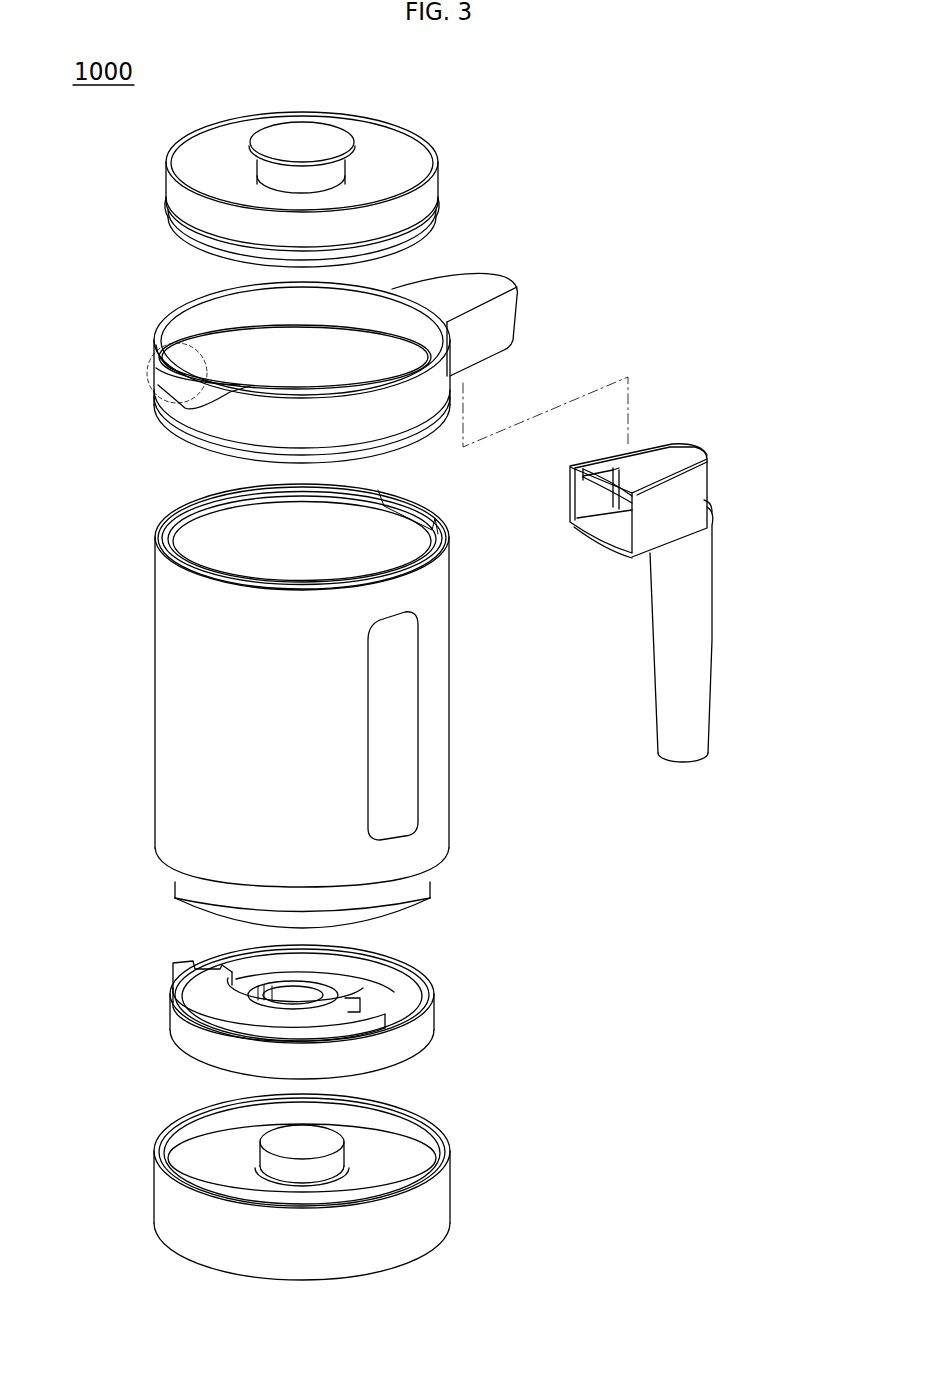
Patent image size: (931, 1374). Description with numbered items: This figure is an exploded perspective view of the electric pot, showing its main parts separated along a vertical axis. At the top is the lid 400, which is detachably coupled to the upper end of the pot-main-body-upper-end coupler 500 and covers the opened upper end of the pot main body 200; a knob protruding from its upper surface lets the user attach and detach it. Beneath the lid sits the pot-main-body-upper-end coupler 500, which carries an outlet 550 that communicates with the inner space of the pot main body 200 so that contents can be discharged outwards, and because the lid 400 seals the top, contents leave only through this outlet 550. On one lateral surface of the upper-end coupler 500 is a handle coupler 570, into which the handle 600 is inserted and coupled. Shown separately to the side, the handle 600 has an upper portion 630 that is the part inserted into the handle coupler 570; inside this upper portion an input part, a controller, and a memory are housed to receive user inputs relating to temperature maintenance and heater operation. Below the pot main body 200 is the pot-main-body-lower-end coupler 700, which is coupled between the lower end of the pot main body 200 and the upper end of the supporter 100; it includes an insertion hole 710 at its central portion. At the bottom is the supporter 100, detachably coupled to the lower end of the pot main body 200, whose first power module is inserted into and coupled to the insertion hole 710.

The supporter 100 is at (175, 1200).
The pot main body 200 is at (175, 727).
The lid 400 is at (173, 190).
The pot-main-body-upper-end coupler 500 is at (298, 340).
The outlet 550 is at (157, 402).
The handle coupler 570 is at (483, 276).
The handle 600 is at (705, 586).
The upper portion 630 is at (692, 486).
The pot-main-body-lower-end coupler 700 is at (266, 993).
The insertion hole 710 is at (310, 1003).